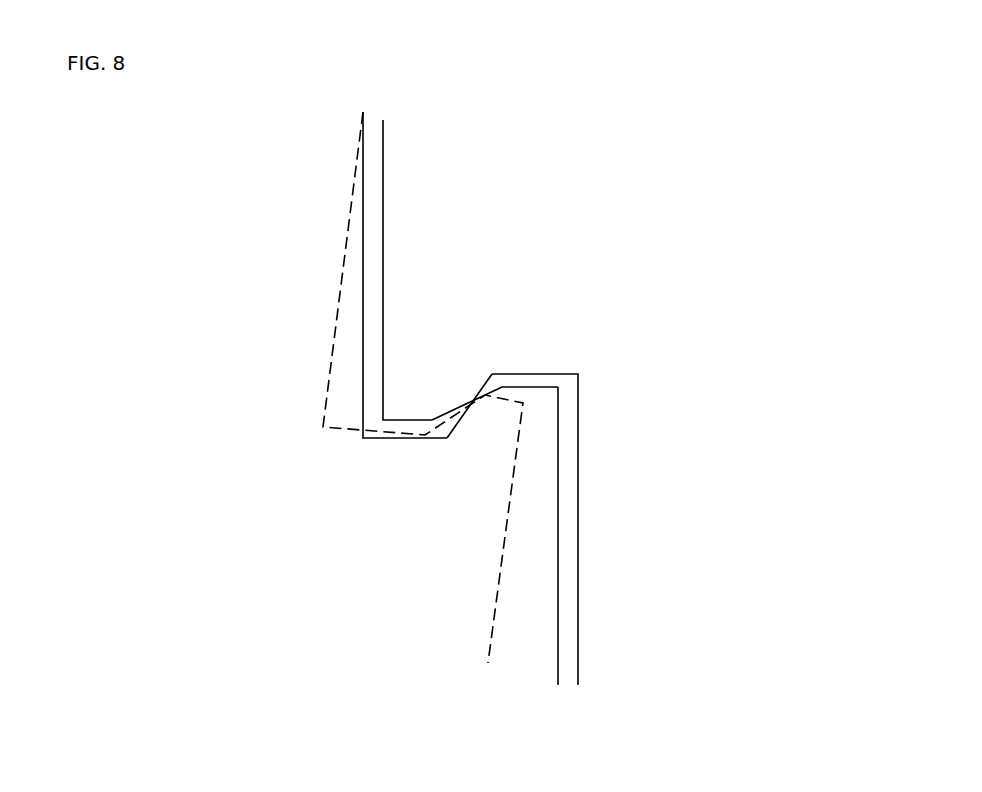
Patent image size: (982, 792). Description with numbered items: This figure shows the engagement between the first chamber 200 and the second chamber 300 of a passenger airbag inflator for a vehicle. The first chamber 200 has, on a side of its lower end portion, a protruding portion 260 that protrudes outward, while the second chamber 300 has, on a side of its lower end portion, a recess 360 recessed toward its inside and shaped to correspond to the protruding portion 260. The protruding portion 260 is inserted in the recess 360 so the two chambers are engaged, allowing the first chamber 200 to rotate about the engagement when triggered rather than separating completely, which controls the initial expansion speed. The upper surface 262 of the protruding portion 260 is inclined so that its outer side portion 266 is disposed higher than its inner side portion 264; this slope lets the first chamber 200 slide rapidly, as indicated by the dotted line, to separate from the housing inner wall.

The first chamber 200 is at (362, 308).
The second chamber 300 is at (383, 201).
The protruding portion 260 is at (482, 500).
The upper surface 262 is at (463, 395).
The inner side portion 264 is at (432, 430).
The outer side portion 266 is at (537, 387).
The recess 360 is at (627, 462).